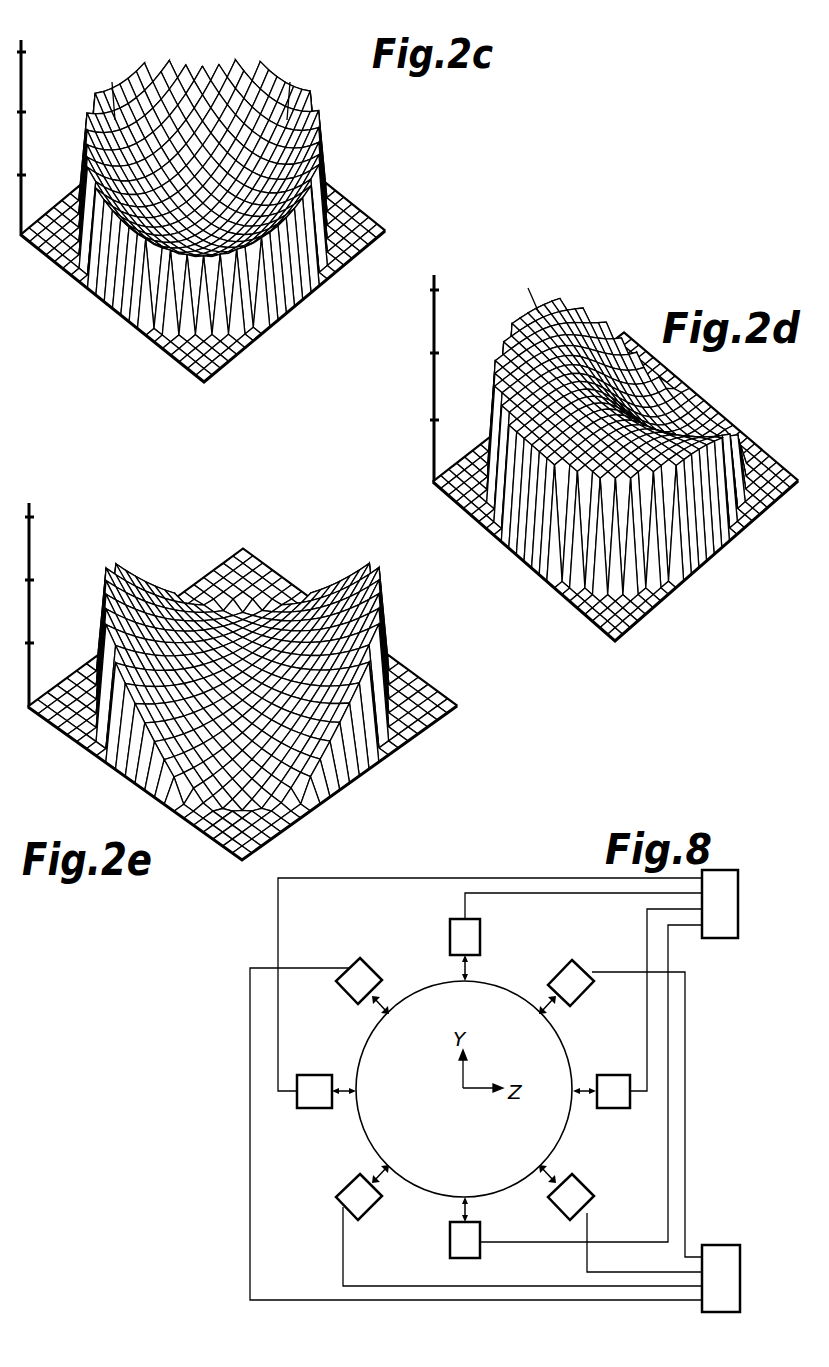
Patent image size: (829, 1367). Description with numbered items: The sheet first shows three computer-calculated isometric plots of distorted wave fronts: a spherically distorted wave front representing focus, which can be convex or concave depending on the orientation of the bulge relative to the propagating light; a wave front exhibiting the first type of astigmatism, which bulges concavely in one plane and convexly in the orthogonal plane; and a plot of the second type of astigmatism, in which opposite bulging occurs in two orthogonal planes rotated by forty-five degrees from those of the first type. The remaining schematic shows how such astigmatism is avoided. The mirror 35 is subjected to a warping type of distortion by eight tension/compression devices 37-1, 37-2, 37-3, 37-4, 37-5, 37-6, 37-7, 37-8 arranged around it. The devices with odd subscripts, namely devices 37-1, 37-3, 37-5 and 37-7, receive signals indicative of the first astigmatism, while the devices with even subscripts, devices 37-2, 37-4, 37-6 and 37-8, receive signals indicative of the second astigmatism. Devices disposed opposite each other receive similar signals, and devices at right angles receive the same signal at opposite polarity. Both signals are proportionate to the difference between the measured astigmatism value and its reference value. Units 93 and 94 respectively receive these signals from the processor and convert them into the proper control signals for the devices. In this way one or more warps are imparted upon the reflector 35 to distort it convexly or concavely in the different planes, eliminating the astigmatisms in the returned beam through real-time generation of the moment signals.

The mirror 35 is at (411, 1054).
The tension/compression device 37-1 is at (470, 938).
The tension/compression device 37-2 is at (574, 985).
The tension/compression device 37-3 is at (614, 1104).
The tension/compression device 37-4 is at (572, 1193).
The tension/compression device 37-5 is at (460, 1240).
The tension/compression device 37-6 is at (353, 1189).
The tension/compression device 37-7 is at (310, 1112).
The tension/compression device 37-8 is at (363, 985).
The unit 93 is at (722, 902).
The unit 94 is at (726, 1278).